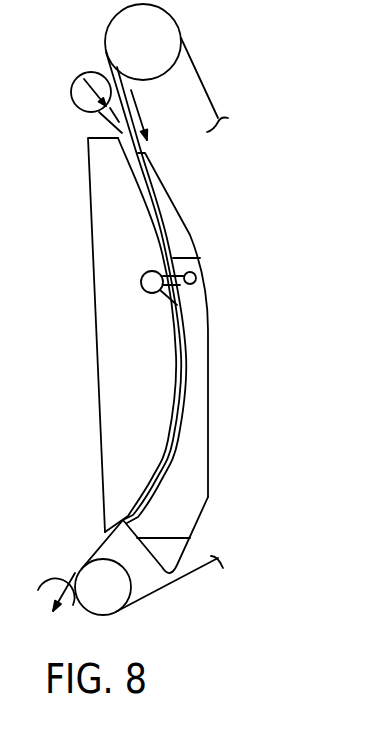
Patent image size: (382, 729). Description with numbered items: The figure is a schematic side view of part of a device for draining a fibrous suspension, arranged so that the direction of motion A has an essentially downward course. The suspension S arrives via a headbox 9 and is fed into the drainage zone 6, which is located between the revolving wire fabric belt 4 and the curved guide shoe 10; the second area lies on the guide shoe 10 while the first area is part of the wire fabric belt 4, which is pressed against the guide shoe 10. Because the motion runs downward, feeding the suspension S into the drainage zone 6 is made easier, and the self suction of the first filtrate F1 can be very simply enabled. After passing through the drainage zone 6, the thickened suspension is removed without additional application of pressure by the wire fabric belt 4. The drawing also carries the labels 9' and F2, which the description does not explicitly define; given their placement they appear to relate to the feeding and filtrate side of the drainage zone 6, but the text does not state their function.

The wire fabric belt 4 is at (201, 77).
The headbox 9 is at (73, 83).
The suspension S is at (94, 125).
The guide shoe 10 is at (148, 414).
The drainage zone 6 is at (162, 339).
The direction of motion A is at (150, 128).
The pressing roller 9' is at (129, 294).
The first filtrate F1 is at (190, 265).
The force F2 is at (172, 550).